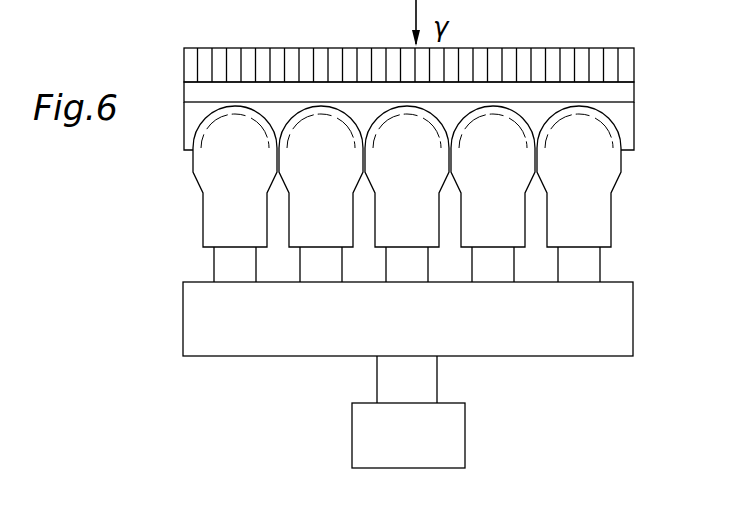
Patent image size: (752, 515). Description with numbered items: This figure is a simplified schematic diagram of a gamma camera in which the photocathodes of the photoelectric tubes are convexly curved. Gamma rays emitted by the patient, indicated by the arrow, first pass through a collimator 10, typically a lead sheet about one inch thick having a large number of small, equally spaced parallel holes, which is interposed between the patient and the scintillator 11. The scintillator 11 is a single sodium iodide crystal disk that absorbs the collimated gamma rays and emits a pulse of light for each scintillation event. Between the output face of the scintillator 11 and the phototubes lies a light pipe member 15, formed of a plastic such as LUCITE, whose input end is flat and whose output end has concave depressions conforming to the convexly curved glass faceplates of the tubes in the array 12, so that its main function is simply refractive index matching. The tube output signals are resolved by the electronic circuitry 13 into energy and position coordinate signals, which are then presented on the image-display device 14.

The collimator 10 is at (634, 65).
The scintillator 11 is at (634, 97).
The array of photoelectric tubes 12 is at (689, 209).
The electronic circuitry 13 is at (633, 318).
The image-display device 14 is at (465, 440).
The light pipe member 15 is at (184, 120).